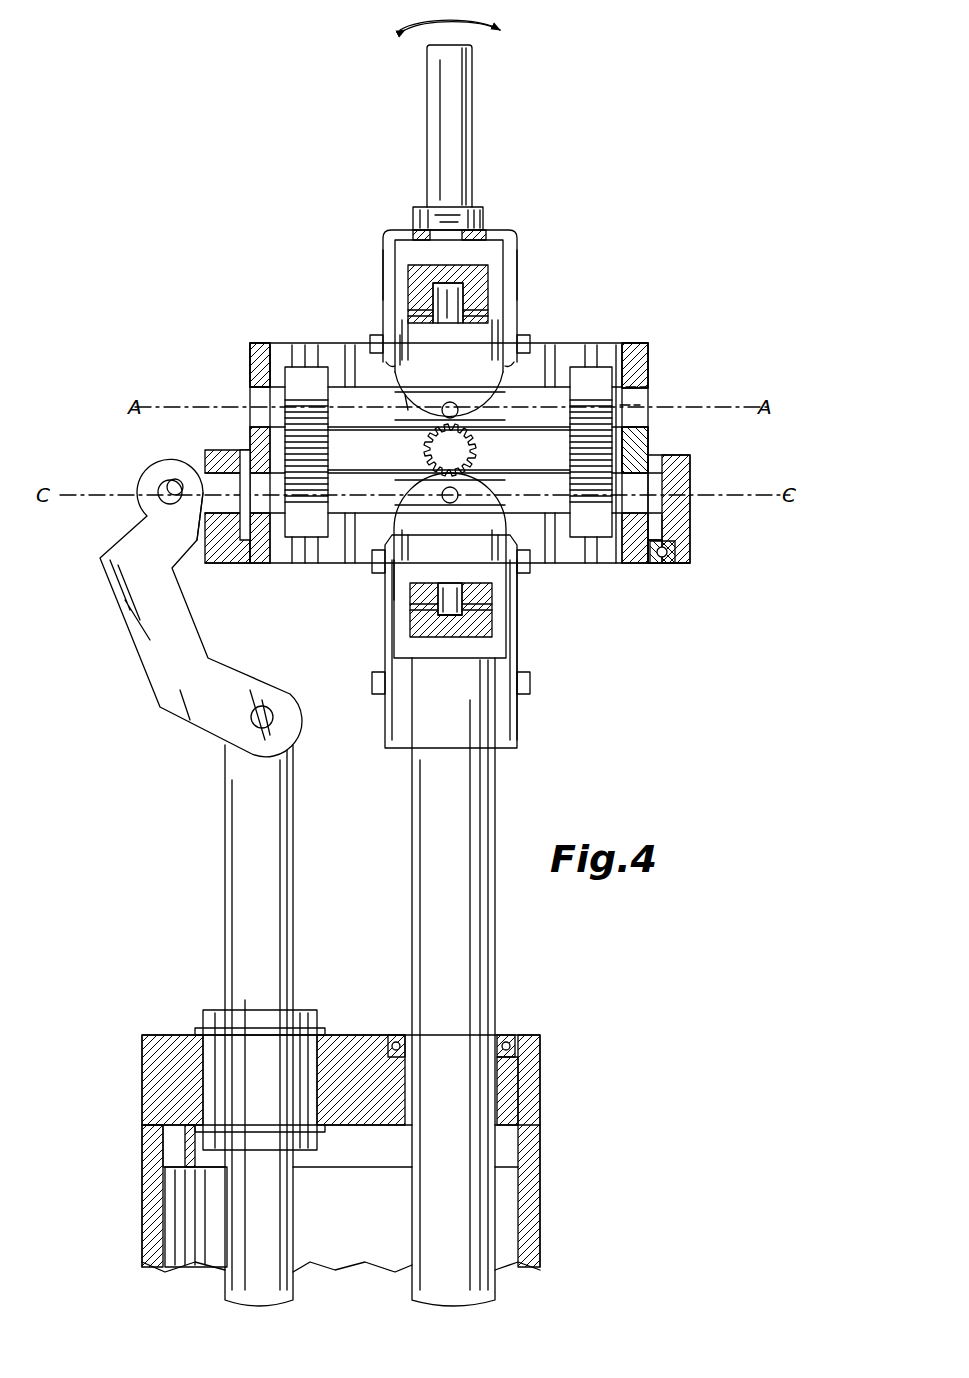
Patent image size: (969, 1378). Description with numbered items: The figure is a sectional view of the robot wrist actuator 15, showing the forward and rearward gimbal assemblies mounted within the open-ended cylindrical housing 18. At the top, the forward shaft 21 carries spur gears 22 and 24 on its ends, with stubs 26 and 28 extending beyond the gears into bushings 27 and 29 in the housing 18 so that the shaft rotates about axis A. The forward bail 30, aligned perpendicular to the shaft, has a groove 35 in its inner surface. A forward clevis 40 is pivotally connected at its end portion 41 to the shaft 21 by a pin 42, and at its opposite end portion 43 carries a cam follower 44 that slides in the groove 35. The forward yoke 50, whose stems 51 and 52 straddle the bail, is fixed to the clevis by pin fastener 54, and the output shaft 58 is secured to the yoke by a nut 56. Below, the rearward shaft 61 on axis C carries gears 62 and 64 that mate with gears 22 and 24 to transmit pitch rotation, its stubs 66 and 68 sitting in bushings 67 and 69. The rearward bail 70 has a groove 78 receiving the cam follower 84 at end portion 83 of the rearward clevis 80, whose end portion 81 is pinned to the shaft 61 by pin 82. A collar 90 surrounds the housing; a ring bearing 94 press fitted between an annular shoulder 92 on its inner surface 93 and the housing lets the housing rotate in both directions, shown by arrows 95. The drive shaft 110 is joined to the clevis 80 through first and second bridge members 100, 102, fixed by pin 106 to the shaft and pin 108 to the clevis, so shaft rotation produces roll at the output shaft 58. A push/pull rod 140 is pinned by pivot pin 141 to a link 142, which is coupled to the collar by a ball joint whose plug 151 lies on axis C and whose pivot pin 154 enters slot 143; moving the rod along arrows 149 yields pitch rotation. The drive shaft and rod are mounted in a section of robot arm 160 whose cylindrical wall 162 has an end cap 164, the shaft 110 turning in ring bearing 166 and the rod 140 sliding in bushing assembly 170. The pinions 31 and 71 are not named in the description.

The robot wrist actuator 15 is at (575, 226).
The housing 18 is at (330, 342).
The forward shaft 21 is at (544, 422).
The gear 22 is at (320, 396).
The gear 24 is at (605, 396).
The stub 26 is at (258, 397).
The bushing 27 is at (255, 380).
The stub 28 is at (640, 402).
The bushing 29 is at (650, 375).
The forward bail 30 is at (436, 268).
The pinion gear 31 is at (470, 443).
The groove 35 is at (452, 292).
The forward clevis 40 is at (432, 352).
The end portion 41 is at (398, 410).
The pin 42 is at (450, 402).
The end portion 43 is at (400, 335).
The cam follower 44 is at (450, 322).
The forward yoke 50 is at (512, 228).
The stem 51 is at (384, 249).
The stem 52 is at (518, 272).
The pin fastener 54 is at (523, 337).
The nut 56 is at (470, 212).
The output shaft 58 is at (470, 68).
The rearward shaft 61 is at (550, 501).
The gear 62 is at (320, 525).
The gear 64 is at (605, 525).
The stub 66 is at (276, 498).
The bushing 67 is at (244, 462).
The stub 68 is at (635, 498).
The bushing 69 is at (655, 458).
The rearward bail 70 is at (470, 620).
The pinion gear 71 is at (424, 452).
The groove 78 is at (450, 640).
The rearward clevis 80 is at (440, 564).
The end portion 81 is at (400, 495).
The pin 82 is at (448, 503).
The end portion 83 is at (393, 568).
The cam follower 84 is at (452, 583).
The collar 90 is at (688, 470).
The annular shoulder 92 is at (665, 548).
The inner surface 93 is at (665, 515).
The ring bearing 94 is at (672, 565).
The arrows 95 is at (490, 28).
The first bridge member 100 is at (388, 712).
The second bridge member 102 is at (520, 712).
The pin 106 is at (524, 678).
The pin 108 is at (524, 568).
The drive shaft 110 is at (468, 880).
The push/pull rod 140 is at (279, 880).
The pivot pin 141 is at (268, 712).
The link 142 is at (178, 622).
The slot 143 is at (162, 502).
The arrows 149 is at (313, 840).
The plug 151 is at (200, 528).
The pivot pin 154 is at (168, 488).
The robot arm 160 is at (140, 1077).
The cylindrical wall 162 is at (535, 1172).
The end cap 164 is at (540, 1078).
The ring bearing 166 is at (518, 1033).
The bushing assembly 170 is at (200, 1018).